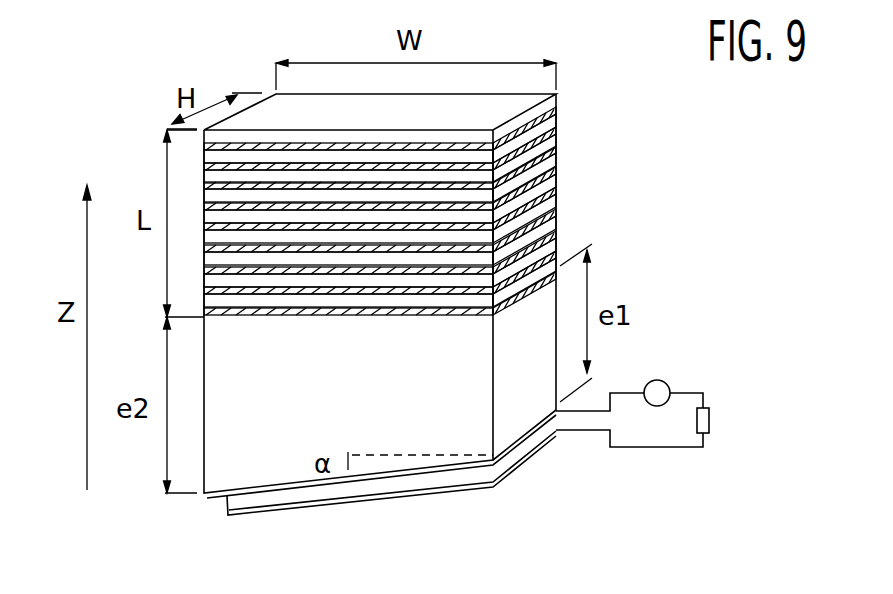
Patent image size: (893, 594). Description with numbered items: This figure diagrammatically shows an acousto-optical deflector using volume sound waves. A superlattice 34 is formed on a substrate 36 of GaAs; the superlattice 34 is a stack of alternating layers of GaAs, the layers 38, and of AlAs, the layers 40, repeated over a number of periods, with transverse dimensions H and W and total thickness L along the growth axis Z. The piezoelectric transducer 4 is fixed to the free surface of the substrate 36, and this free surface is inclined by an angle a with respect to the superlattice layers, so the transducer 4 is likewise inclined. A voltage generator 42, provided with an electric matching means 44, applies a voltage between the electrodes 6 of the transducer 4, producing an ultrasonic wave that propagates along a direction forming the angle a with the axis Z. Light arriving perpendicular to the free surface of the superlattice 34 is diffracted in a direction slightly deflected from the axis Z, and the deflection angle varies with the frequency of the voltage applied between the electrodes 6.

The superlattice 34 is at (566, 177).
The substrate 36 is at (207, 497).
The GaAs layers 38 is at (232, 302).
The AlAs layers 40 is at (367, 312).
The piezoelectric transducer 4 is at (393, 485).
The electrode 6 is at (278, 507).
The voltage generator 42 is at (662, 392).
The electric matching means 44 is at (710, 425).